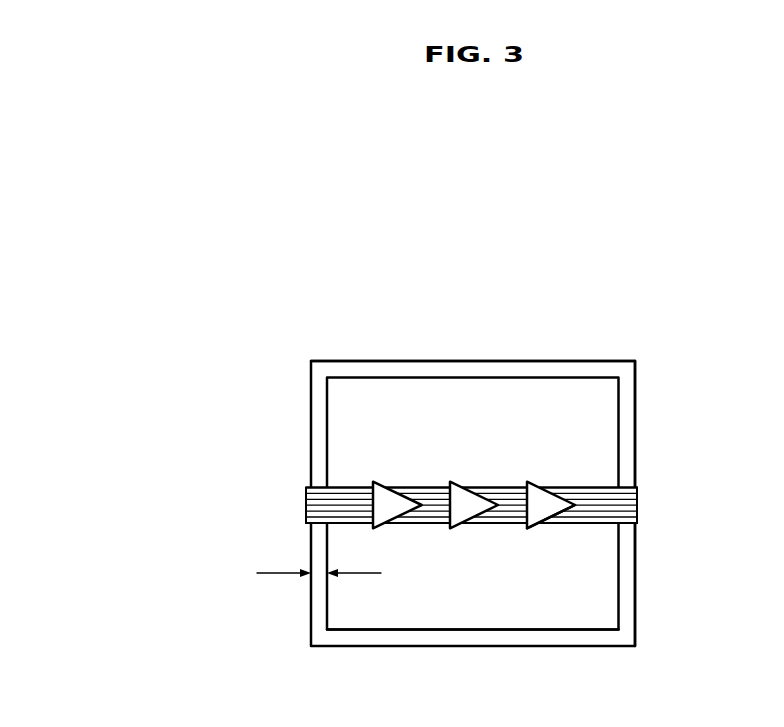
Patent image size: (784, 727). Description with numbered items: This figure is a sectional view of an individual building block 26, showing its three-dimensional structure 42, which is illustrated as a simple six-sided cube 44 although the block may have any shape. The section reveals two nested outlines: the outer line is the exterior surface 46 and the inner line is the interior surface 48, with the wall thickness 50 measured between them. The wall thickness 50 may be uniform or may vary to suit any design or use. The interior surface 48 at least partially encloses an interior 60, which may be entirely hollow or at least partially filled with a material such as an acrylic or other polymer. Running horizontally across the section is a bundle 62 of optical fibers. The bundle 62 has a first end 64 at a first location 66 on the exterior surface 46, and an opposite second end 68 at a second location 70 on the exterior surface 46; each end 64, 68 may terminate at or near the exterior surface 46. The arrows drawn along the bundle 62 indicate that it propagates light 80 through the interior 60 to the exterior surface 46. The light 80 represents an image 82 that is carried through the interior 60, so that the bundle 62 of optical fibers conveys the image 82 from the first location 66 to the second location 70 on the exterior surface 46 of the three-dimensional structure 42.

The building block 26 is at (170, 286).
The three-dimensional structure 42 is at (311, 403).
The six-sided cube 44 is at (636, 362).
The exterior surface 46 is at (418, 361).
The interior surface 48 is at (487, 630).
The wall thickness 50 is at (279, 581).
The interior 60 is at (482, 392).
The bundle of optical fibers 62 is at (240, 485).
The first end 64 is at (306, 503).
The first location 66 is at (307, 487).
The second end 68 is at (637, 504).
The second location 70 is at (636, 529).
The light 80 is at (540, 503).
The image 82 is at (540, 512).